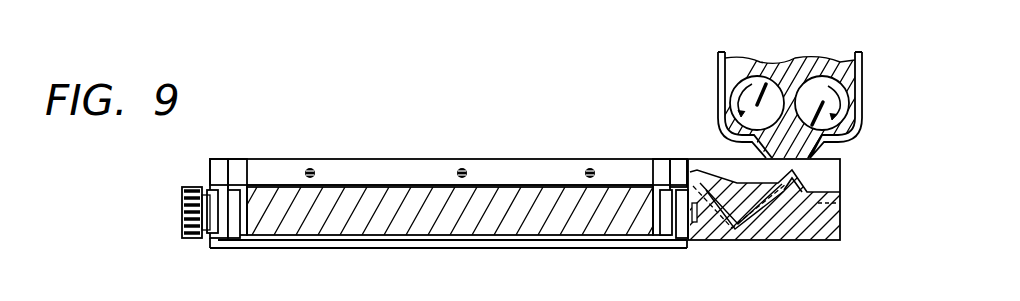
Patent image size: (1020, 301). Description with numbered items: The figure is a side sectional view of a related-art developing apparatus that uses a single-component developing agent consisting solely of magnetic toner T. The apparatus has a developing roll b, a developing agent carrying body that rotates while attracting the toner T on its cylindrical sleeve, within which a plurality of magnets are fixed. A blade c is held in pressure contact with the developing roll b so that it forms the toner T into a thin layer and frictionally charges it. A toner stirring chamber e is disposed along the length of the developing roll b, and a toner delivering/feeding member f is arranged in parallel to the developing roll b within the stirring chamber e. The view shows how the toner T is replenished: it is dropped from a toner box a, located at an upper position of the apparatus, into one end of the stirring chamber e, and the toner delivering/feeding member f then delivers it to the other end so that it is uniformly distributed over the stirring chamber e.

The toner T is at (698, 164).
The toner box a is at (861, 52).
The developing roll b is at (443, 240).
The blade c is at (420, 170).
The toner stirring chamber e is at (808, 242).
The toner delivering/feeding member f is at (838, 203).